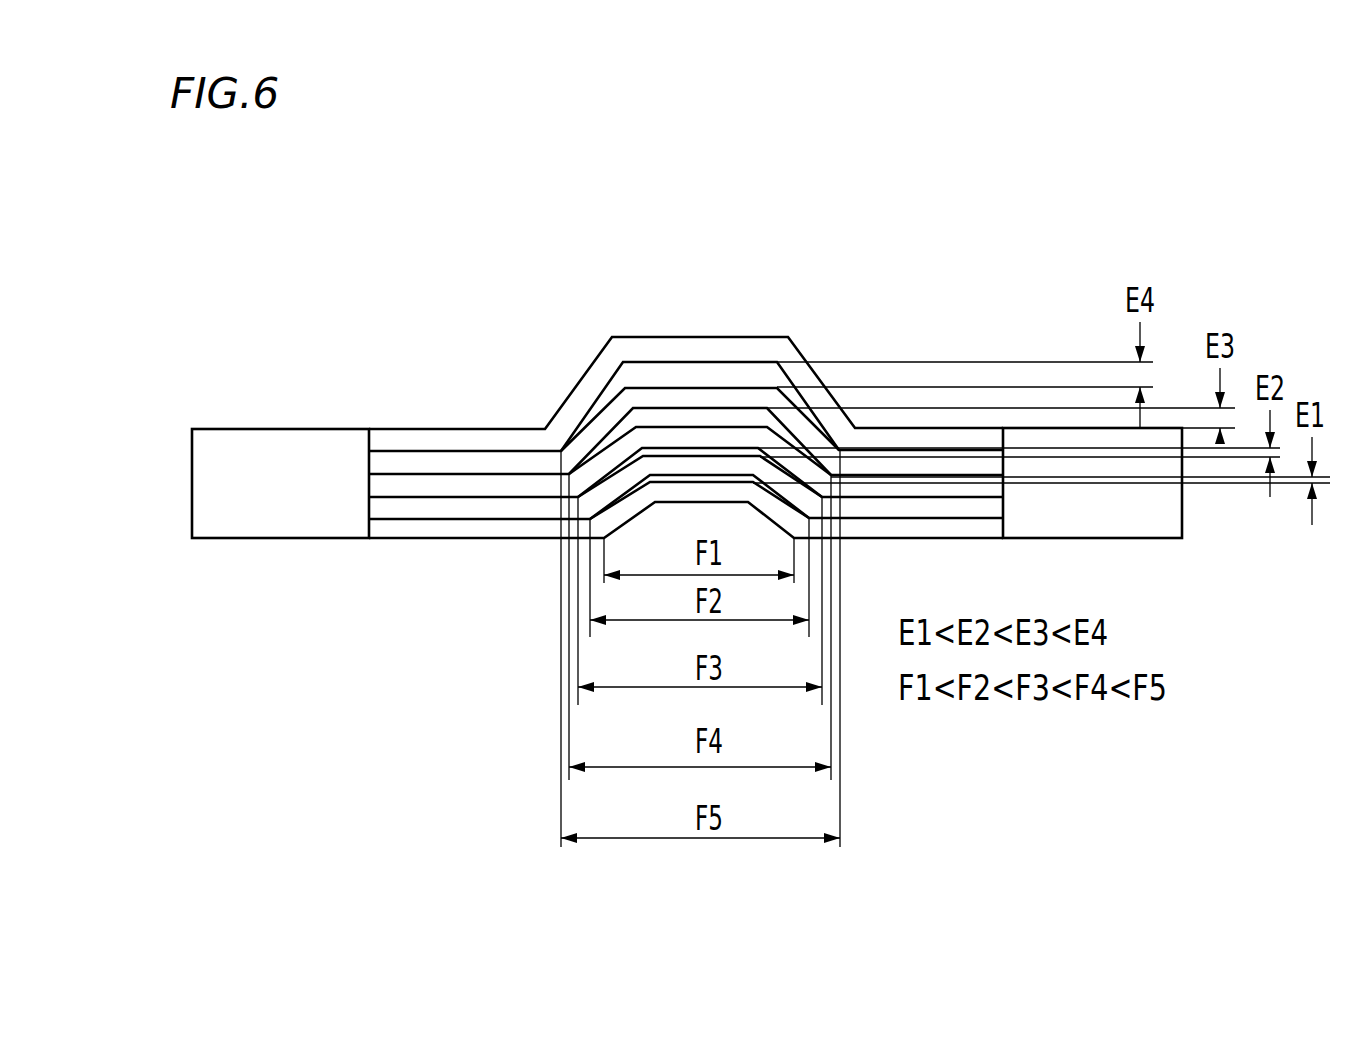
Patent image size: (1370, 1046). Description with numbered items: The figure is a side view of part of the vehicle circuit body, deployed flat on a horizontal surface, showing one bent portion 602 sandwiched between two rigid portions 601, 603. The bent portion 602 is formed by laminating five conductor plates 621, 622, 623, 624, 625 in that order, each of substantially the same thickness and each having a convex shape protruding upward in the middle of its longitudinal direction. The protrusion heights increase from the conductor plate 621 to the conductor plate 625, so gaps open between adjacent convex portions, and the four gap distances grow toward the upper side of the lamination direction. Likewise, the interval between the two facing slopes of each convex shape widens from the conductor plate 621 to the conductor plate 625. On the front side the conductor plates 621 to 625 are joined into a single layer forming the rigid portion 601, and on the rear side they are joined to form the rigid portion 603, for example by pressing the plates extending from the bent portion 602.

The rigid portion 601 is at (255, 442).
The bent portion 602 is at (850, 318).
The rigid portion 603 is at (1158, 522).
The conductor plate 621 is at (385, 528).
The conductor plate 622 is at (413, 508).
The conductor plate 623 is at (438, 483).
The conductor plate 624 is at (468, 460).
The conductor plate 625 is at (512, 438).